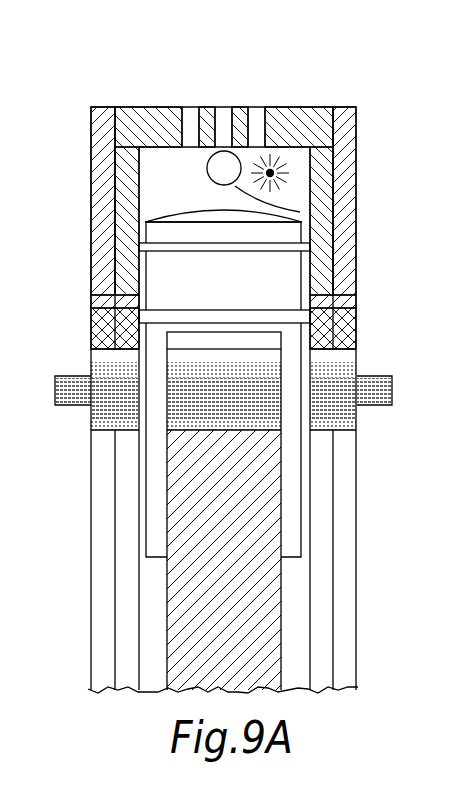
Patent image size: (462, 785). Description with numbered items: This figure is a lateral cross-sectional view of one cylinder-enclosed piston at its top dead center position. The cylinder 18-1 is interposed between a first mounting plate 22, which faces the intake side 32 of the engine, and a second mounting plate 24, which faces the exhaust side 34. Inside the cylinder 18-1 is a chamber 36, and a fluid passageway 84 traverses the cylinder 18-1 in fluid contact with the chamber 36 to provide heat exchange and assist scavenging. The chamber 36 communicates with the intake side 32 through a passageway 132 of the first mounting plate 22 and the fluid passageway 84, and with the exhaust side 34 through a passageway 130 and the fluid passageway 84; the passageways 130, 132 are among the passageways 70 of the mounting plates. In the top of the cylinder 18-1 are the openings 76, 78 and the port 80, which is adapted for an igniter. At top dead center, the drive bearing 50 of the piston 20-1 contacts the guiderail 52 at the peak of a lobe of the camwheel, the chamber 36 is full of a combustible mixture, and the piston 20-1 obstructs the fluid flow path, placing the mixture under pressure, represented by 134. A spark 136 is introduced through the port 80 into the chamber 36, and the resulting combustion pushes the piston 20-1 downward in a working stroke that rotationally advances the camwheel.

The cylinder 18-1 is at (297, 104).
The intake side 32 is at (91, 130).
The exhaust side 34 is at (357, 128).
The first mounting plate 22 is at (98, 184).
The second mounting plate 24 is at (356, 182).
The first opening 76 is at (188, 104).
The second opening 78 is at (223, 104).
The port 80 is at (253, 104).
The chamber 36 is at (143, 175).
The spark 136 is at (285, 181).
The piston 20-1 is at (228, 207).
The pressure 134 is at (302, 218).
The passageway 132 is at (105, 300).
The passageway 130 is at (343, 300).
The passageways 70 is at (100, 305).
The fluid passageway 84 is at (125, 318).
The guiderail 52 is at (230, 422).
The drive bearing 50 is at (272, 623).